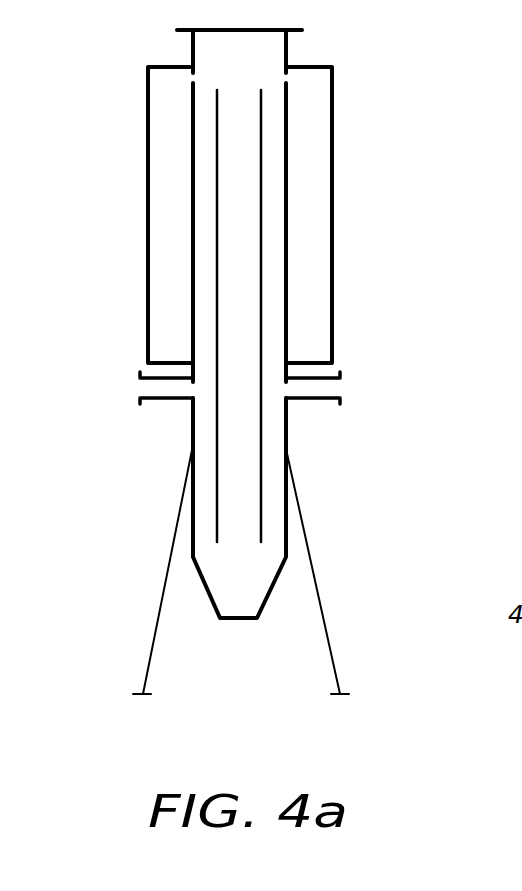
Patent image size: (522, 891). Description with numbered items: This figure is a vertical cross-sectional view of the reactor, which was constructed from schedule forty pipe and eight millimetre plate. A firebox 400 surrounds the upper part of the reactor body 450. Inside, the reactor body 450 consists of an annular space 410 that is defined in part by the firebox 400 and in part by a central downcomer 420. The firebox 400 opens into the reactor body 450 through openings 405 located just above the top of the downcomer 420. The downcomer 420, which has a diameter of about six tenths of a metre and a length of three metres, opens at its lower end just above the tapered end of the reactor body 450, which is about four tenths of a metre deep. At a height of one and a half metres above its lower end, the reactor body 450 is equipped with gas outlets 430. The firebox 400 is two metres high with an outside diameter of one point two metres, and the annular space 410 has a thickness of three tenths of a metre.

The firebox 400 is at (321, 118).
The openings 405 is at (296, 78).
The annular space 410 is at (275, 230).
The central downcomer 420 is at (233, 420).
The gas outlets 430 is at (336, 390).
The reactor body 450 is at (193, 117).